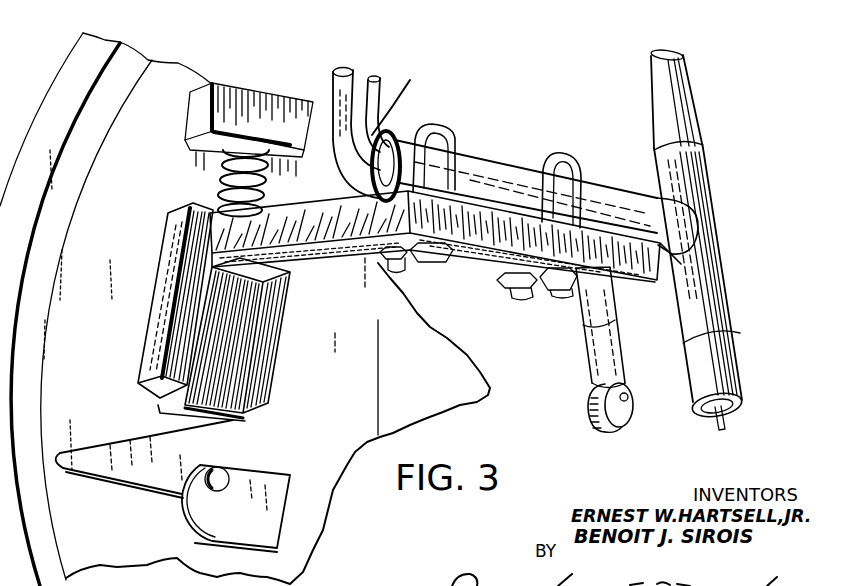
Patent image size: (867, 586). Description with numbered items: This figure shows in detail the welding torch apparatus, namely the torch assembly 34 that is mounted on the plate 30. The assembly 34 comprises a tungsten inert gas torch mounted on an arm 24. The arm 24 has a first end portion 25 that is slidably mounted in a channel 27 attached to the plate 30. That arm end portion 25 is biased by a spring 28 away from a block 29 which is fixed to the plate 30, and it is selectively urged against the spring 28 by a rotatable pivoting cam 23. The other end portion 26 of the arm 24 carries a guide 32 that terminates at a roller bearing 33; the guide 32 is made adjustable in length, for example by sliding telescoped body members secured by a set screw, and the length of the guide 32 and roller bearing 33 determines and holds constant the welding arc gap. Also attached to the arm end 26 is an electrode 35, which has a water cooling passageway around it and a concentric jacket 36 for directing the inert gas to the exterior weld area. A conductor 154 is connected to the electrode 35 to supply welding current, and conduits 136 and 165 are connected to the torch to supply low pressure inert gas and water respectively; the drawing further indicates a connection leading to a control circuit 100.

The rotatable pivoting cam 23 is at (220, 448).
The arm 24 is at (340, 260).
The first end portion 25 is at (240, 327).
The other end portion 26 is at (491, 266).
The channel 27 is at (155, 323).
The spring 28 is at (232, 162).
The block 29 is at (233, 100).
The plate 30 is at (126, 208).
The guide 32 is at (595, 343).
The roller bearing 33 is at (608, 437).
The torch assembly 34 is at (830, 106).
The electrode 35 is at (727, 413).
The concentric jacket 36 is at (720, 360).
The control circuit 100 is at (393, 33).
The conduit 136 is at (362, 80).
The conductor 154 is at (390, 114).
The conduit 165 is at (343, 72).